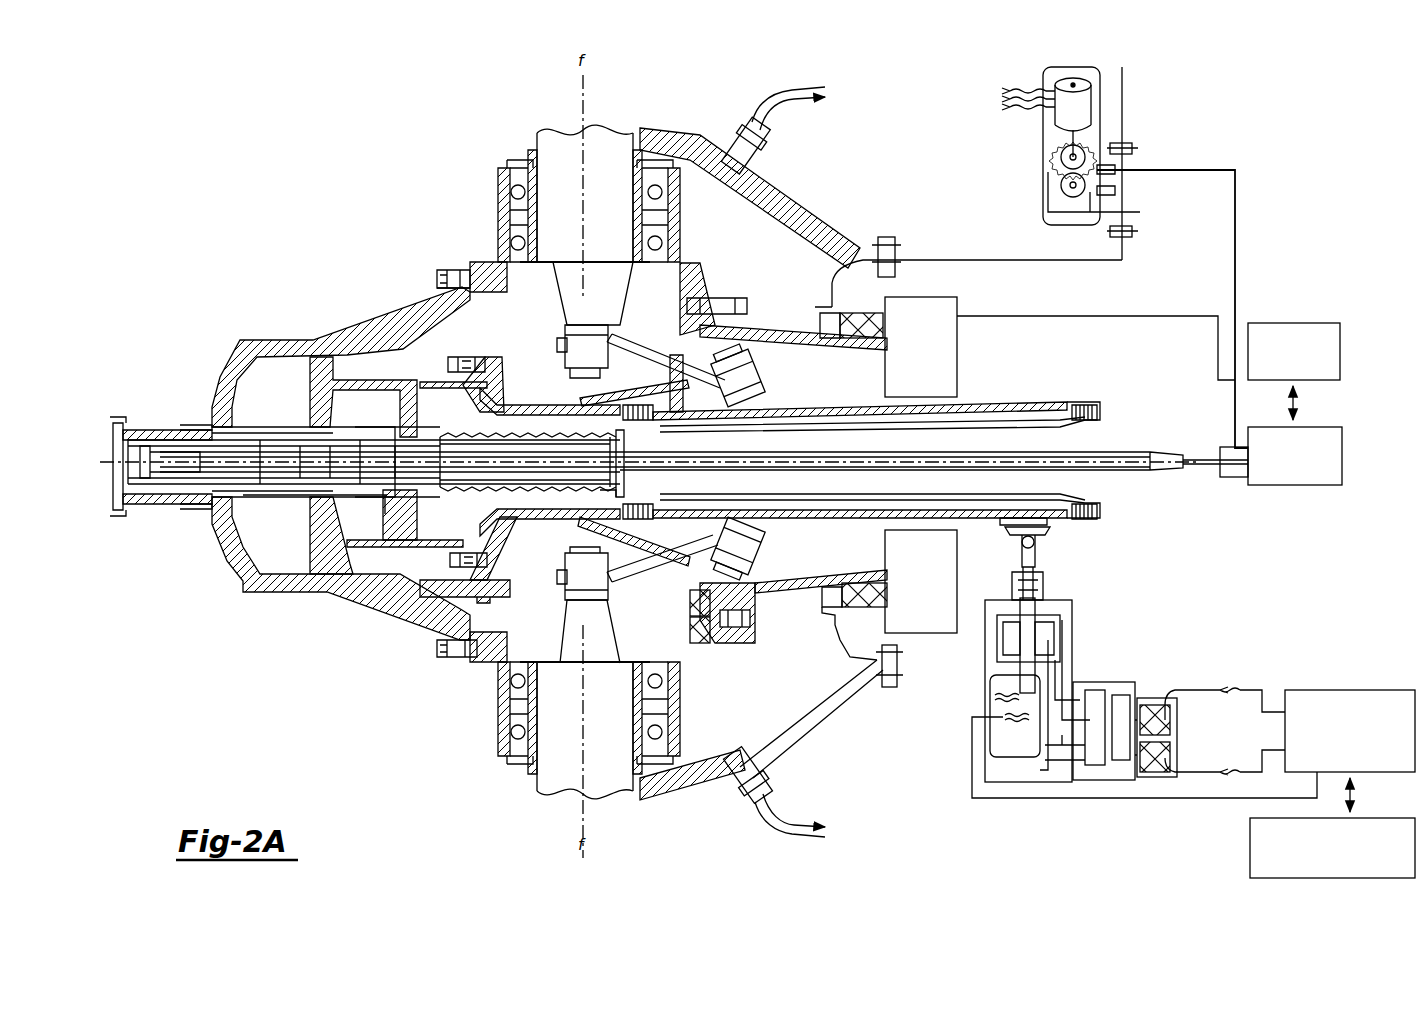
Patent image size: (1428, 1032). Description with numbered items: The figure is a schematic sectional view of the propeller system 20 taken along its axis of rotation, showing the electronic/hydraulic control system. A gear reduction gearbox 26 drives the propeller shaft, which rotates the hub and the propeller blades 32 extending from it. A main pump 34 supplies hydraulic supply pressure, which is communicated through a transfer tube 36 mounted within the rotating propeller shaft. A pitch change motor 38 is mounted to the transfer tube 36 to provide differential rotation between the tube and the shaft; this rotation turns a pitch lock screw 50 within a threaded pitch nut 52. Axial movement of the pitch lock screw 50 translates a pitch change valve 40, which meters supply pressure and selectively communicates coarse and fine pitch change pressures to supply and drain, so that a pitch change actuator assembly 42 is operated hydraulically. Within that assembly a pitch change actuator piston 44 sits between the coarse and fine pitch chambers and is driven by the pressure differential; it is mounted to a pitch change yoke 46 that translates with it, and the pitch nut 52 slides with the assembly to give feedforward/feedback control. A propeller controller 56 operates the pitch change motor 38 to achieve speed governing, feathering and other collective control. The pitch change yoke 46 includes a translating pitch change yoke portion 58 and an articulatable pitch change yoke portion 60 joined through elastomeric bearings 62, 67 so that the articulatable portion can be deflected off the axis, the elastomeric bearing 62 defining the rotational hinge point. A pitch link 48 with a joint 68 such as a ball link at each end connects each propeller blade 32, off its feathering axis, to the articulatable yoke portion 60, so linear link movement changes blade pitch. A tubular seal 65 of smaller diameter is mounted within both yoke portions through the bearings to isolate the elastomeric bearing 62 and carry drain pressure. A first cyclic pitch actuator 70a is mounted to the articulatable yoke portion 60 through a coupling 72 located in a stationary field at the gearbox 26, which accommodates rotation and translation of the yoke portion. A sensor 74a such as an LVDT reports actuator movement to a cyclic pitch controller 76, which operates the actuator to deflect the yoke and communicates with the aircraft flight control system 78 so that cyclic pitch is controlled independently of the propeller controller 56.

The propeller system 20 is at (268, 222).
The gear reduction gearbox 26 is at (940, 378).
The propeller blades 32 is at (527, 148).
The main pump 34 is at (1100, 118).
The transfer tube 36 is at (1130, 455).
The pitch change motor 38 is at (1296, 487).
The pitch change valve 40 is at (318, 496).
The pitch change actuator assembly 42 is at (460, 348).
The pitch change actuator piston 44 is at (347, 553).
The pitch change yoke 46 is at (503, 368).
The pitch link 48 is at (744, 334).
The pitch lock screw 50 is at (486, 420).
The threaded pitch nut 52 is at (532, 500).
The propeller controller 56 is at (1298, 323).
The translating pitch change yoke portion 58 is at (518, 402).
The articulatable pitch change yoke portion 60 is at (805, 402).
The elastomeric bearing 62 is at (673, 570).
The tubular seal 65 is at (1085, 500).
The elastomeric bearing 67 is at (637, 403).
The joint 68 is at (608, 325).
The first cyclic pitch actuator 70a is at (1060, 778).
The coupling 72 is at (1046, 535).
The sensor 74a is at (1040, 650).
The cyclic pitch controller 76 is at (1352, 690).
The aircraft flight control system 78 is at (1250, 852).